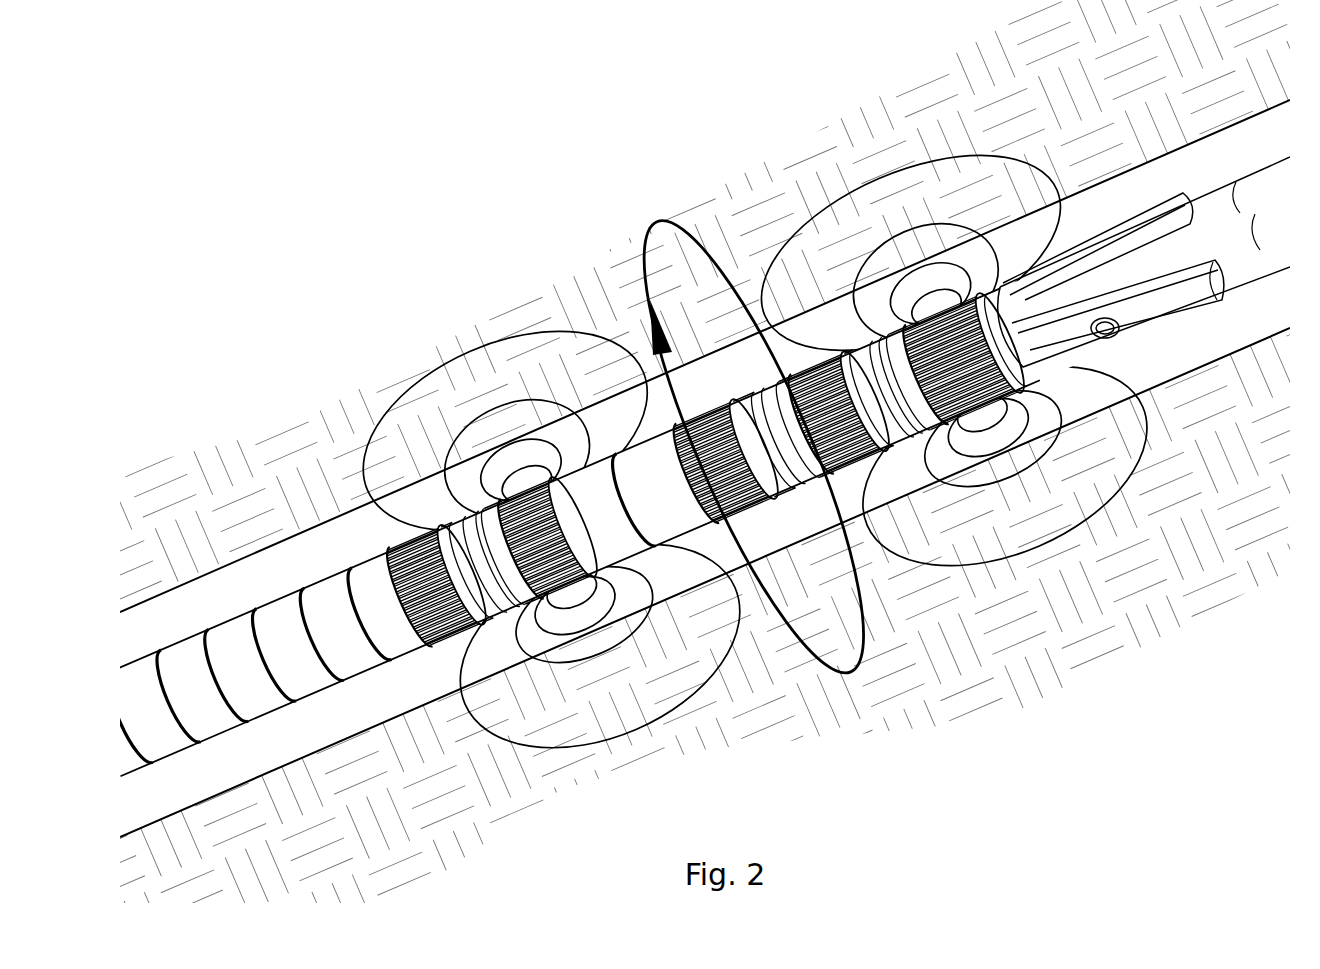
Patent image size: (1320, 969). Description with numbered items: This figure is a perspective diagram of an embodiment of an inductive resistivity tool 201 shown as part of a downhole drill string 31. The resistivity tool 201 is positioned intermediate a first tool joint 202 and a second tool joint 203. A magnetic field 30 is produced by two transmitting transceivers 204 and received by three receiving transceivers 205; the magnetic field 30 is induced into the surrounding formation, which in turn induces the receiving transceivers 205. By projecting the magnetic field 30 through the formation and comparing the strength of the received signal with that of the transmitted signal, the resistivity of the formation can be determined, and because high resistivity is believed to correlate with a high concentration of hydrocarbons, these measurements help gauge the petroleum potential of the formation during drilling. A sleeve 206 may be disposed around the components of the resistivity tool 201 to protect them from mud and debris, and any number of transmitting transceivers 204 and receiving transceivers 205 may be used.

The magnetic field 30 is at (464, 333).
The downhole drill string 31 is at (262, 735).
The inductive resistivity tool 201 is at (340, 505).
The first tool joint 202 is at (372, 640).
The second tool joint 203 is at (1001, 350).
The transmitting transceiver 204 is at (452, 641).
The receiving transceiver 205 is at (740, 512).
The sleeve 206 is at (628, 450).